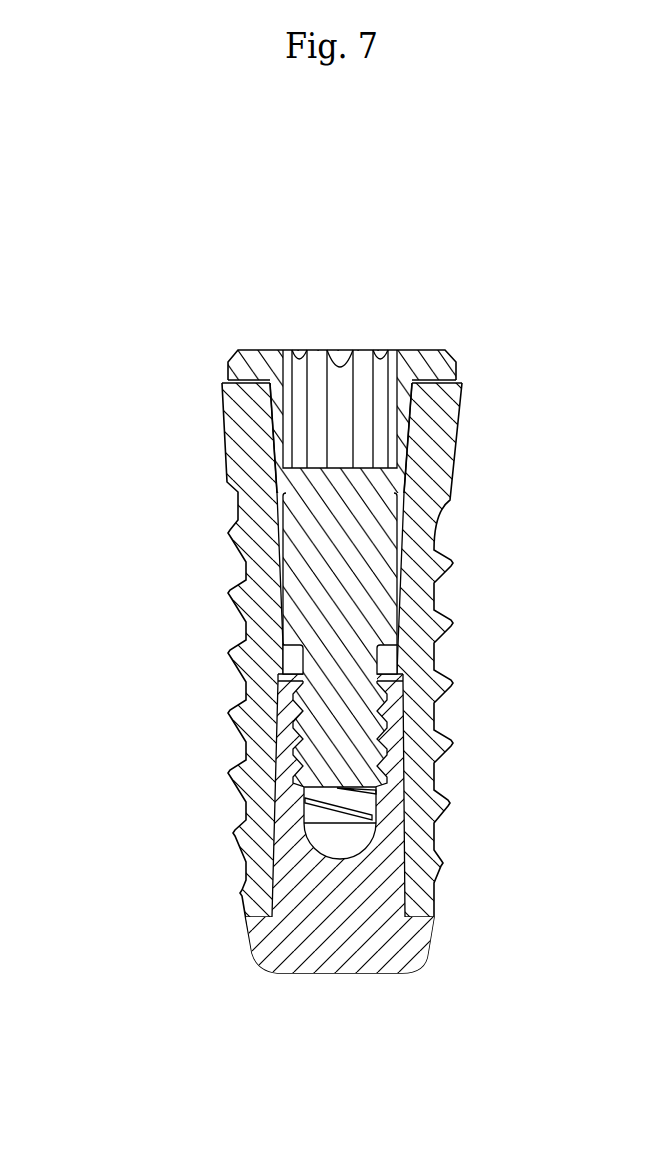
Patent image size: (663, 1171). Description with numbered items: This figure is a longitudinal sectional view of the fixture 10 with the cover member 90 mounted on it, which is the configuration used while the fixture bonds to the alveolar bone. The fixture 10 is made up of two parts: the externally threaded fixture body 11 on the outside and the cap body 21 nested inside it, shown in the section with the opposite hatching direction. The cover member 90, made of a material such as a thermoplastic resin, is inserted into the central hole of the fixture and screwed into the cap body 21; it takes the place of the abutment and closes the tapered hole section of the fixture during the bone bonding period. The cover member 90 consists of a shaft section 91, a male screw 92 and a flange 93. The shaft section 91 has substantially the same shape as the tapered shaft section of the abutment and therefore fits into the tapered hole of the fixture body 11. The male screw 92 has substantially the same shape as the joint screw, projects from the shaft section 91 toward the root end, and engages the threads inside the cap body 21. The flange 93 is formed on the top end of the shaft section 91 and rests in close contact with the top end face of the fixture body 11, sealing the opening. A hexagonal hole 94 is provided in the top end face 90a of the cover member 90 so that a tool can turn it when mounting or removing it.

The fixture 10 is at (260, 678).
The fixture body 11 is at (245, 479).
The cap body 21 is at (269, 823).
The cover member 90 is at (363, 518).
The top end face 90a is at (387, 350).
The shaft section 91 is at (400, 534).
The male screw 92 is at (367, 691).
The flange 93 is at (422, 368).
The hexagonal hole 94 is at (323, 390).